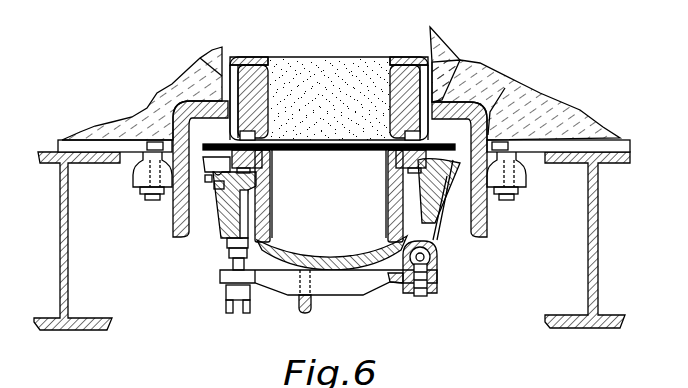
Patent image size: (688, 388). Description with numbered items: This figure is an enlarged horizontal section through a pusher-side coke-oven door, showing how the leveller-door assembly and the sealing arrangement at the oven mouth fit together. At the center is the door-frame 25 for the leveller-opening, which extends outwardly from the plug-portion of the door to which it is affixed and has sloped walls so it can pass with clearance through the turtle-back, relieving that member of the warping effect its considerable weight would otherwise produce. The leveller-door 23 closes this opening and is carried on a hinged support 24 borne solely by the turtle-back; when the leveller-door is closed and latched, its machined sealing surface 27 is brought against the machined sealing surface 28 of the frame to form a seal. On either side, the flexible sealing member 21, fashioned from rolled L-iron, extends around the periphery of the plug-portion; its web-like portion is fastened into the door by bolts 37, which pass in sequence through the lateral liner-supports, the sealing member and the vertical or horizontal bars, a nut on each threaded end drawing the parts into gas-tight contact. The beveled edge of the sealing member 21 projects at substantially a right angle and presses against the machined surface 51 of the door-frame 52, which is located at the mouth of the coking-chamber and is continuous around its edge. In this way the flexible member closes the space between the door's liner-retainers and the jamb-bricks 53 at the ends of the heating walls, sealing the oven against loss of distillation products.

The flexible sealing member 21 is at (173, 127).
The leveller-door 23 is at (297, 252).
The hinged support 24 is at (438, 259).
The door-frame for the leveller-opening 25 is at (272, 183).
The machined sealing surface of the leveller-door 27 is at (230, 262).
The machined sealing surface of the leveller-door frame 28 is at (208, 287).
The bolts 37 is at (218, 186).
The machined surface 51 is at (222, 58).
The door-frame 52 is at (137, 114).
The jamb-bricks 53 is at (88, 132).